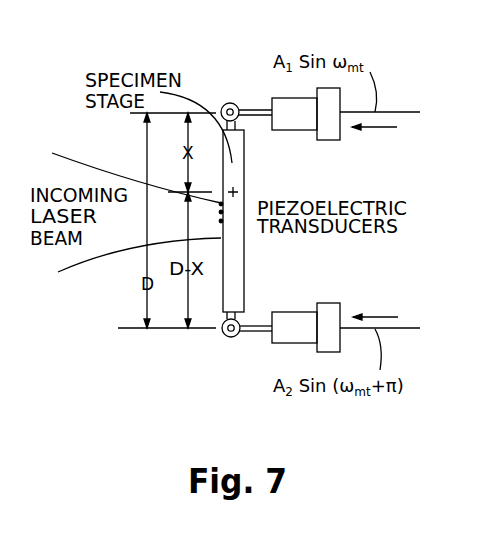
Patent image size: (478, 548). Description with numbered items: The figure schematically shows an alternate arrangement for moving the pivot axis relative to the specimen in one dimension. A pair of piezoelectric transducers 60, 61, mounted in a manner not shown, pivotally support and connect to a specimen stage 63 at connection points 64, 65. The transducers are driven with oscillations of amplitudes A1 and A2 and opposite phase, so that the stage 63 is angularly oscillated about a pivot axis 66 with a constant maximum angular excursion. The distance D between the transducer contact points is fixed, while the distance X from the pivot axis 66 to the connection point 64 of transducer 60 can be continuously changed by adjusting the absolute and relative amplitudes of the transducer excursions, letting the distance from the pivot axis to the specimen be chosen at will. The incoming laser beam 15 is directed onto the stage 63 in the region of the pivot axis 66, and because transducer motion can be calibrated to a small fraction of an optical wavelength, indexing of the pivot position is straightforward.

The incoming laser beam 15 is at (222, 208).
The transducer 60 is at (337, 193).
The transducer 61 is at (318, 238).
The specimen stage 63 is at (232, 298).
The transducer connection point 64 is at (230, 103).
The transducer connection point 65 is at (223, 334).
The pivot axis 66 is at (238, 181).